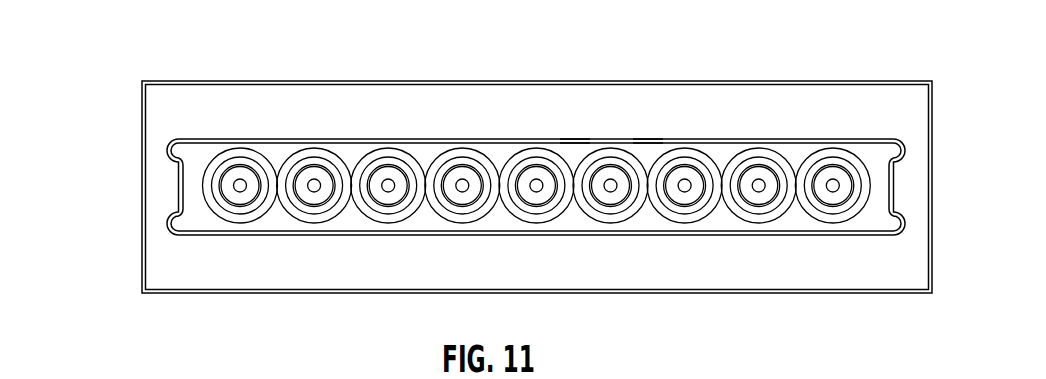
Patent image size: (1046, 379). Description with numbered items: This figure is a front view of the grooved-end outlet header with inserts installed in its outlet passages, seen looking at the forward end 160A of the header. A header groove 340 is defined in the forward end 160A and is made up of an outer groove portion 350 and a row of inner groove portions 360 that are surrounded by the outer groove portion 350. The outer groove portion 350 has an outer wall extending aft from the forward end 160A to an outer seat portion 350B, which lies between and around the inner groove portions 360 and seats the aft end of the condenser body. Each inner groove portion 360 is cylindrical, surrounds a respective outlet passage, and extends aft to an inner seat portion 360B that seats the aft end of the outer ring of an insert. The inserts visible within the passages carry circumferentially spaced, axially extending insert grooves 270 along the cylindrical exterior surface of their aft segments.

The forward end of the outlet header 160A is at (156, 135).
The header groove 340 is at (200, 157).
The insert grooves 270 is at (310, 175).
The inner groove portions 360 is at (457, 155).
The outer groove portion 350 is at (577, 155).
The outer seat portion 350B is at (650, 155).
The inner seat portion 360B is at (762, 155).